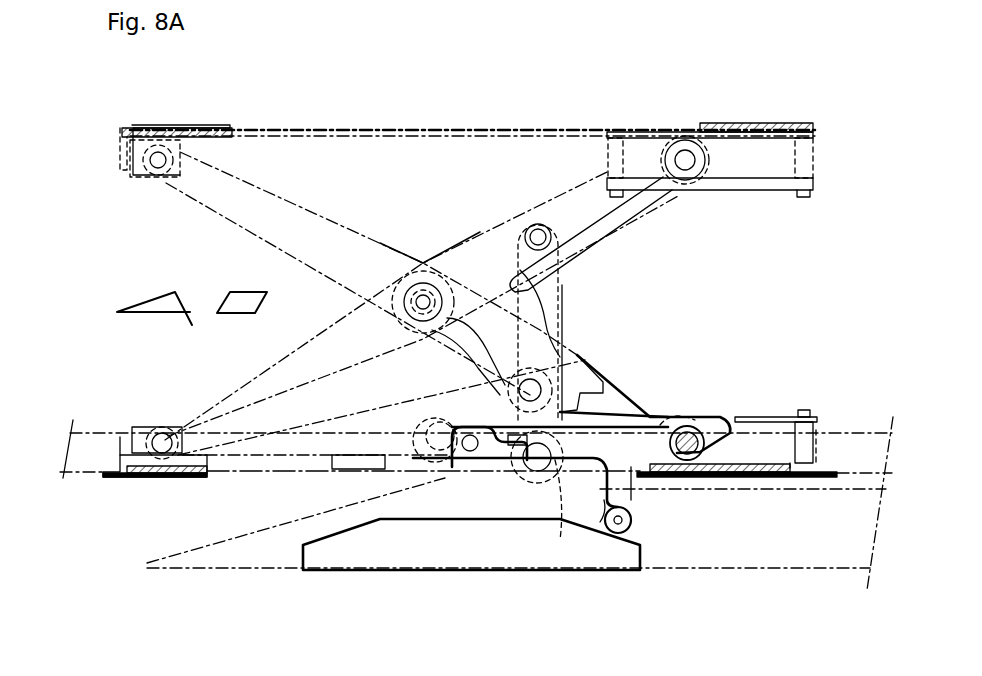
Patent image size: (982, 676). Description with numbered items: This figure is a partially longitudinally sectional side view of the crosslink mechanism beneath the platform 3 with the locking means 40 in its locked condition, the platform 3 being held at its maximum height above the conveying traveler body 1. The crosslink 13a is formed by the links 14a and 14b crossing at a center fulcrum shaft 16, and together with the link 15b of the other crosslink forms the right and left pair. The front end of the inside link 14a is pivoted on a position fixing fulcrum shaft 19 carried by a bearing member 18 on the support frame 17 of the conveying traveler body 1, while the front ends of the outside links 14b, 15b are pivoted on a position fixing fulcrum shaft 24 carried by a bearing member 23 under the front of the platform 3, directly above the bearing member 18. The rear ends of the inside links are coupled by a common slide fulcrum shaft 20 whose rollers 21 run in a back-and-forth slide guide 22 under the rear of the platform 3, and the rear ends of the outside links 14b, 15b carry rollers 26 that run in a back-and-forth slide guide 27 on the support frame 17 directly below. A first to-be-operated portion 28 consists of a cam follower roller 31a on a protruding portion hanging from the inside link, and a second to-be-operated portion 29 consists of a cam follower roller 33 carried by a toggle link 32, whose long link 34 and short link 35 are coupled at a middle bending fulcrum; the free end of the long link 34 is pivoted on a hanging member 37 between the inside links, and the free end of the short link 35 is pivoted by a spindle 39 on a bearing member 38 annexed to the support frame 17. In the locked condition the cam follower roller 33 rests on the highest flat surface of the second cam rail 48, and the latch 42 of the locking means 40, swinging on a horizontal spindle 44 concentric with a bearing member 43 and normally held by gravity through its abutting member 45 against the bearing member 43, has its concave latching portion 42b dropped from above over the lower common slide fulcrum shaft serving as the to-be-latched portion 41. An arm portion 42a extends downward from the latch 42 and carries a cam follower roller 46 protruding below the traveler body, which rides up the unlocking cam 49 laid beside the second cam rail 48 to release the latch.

The conveying traveler body 1 is at (867, 445).
The platform 3 is at (562, 129).
The crosslink 13a is at (463, 133).
The link 14a is at (340, 335).
The link 14b is at (313, 210).
The link 15b is at (633, 400).
The center fulcrum shaft 16 is at (423, 270).
The support frame 17 is at (170, 468).
The bearing member 18 is at (135, 423).
The position fixing fulcrum shaft 19 is at (160, 433).
The common slide fulcrum shaft 20 is at (680, 148).
The roller 21 is at (705, 145).
The back-and-forth slide guide 22 is at (753, 195).
The bearing member 23 is at (133, 187).
The position fixing fulcrum shaft 24 is at (158, 182).
The roller 26 is at (757, 460).
The back-and-forth slide guide 27 is at (773, 413).
The first to-be-operated portion 28 is at (507, 390).
The second to-be-operated portion 29 is at (538, 493).
The cam follower roller 31a is at (587, 320).
The toggle link 32 is at (567, 287).
The cam follower roller 33 is at (560, 462).
The long link 34 is at (577, 252).
The short link 35 is at (513, 447).
The hanging member 37 is at (538, 228).
The bearing member 38 is at (360, 413).
The spindle 39 is at (403, 460).
The locking means 40 is at (712, 417).
The to-be-latched portion 41 is at (681, 456).
The latch 42 is at (712, 420).
The arm portion 42a is at (622, 527).
The concave latching portion 42b is at (675, 424).
The bearing member 43 is at (413, 453).
The horizontal spindle 44 is at (515, 447).
The abutting member 45 is at (470, 450).
The cam follower roller 46 is at (625, 515).
The second cam rail 48 is at (828, 555).
The unlocking cam 49 is at (397, 548).